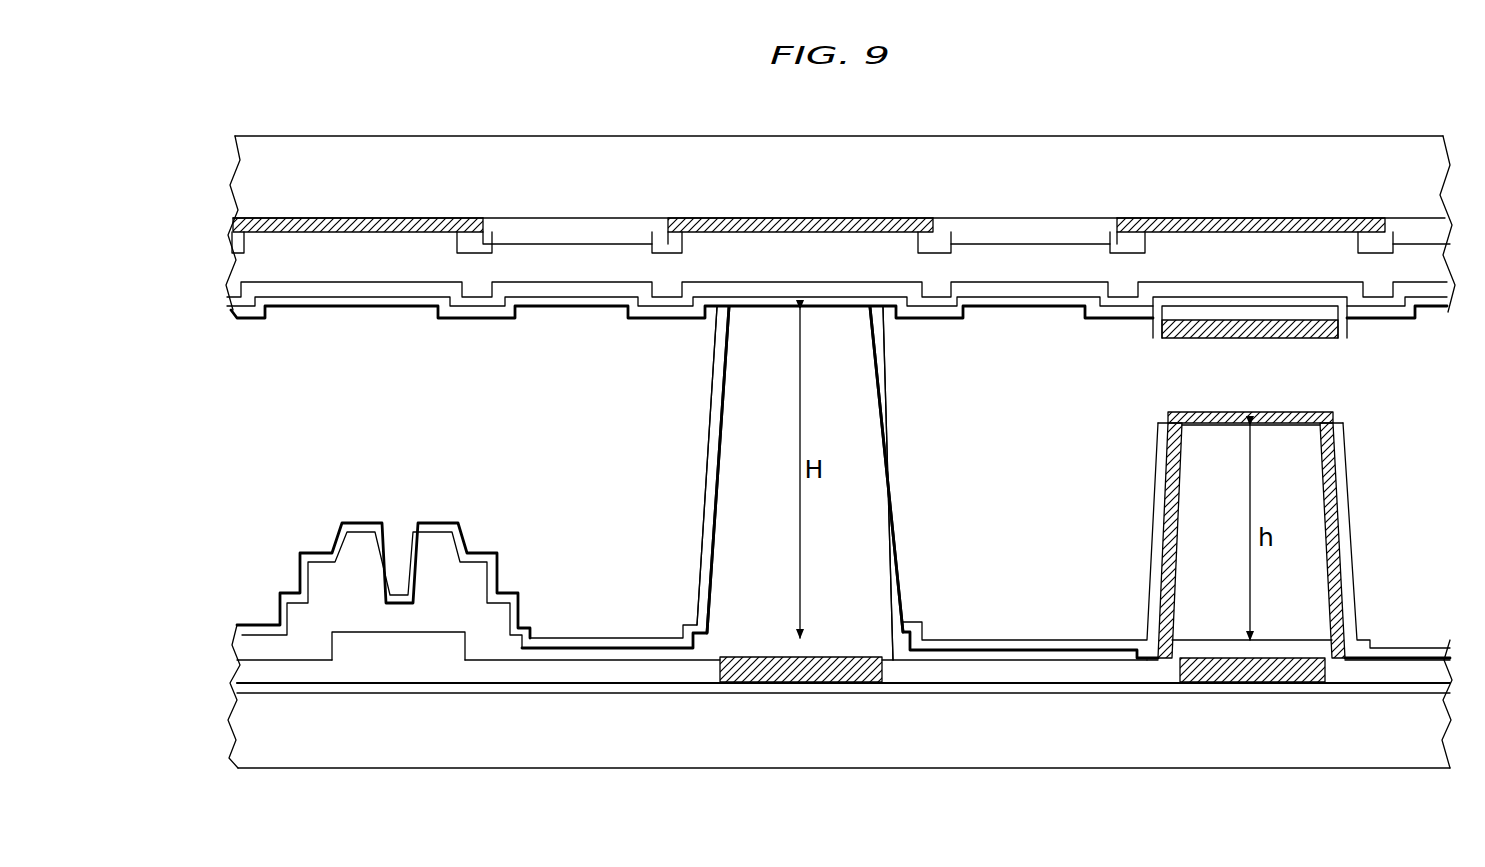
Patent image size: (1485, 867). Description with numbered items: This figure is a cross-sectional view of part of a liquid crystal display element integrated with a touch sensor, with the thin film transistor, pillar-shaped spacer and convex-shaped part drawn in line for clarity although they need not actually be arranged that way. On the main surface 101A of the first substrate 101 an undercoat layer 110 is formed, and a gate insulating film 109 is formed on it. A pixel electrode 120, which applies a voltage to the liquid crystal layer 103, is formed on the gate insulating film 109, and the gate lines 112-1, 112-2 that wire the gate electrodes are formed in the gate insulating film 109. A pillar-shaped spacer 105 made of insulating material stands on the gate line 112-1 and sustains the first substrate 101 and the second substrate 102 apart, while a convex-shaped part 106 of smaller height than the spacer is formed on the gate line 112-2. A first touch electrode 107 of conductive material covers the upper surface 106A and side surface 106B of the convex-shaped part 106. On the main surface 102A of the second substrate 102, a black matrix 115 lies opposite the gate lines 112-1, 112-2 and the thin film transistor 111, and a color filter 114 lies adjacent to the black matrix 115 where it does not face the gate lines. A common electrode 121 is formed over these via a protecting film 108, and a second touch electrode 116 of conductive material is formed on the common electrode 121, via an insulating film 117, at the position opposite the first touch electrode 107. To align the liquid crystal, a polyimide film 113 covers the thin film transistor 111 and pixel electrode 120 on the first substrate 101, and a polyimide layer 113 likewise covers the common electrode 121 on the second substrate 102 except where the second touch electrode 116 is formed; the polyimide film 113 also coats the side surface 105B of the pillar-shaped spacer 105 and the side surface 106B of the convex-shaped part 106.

The first substrate 101 is at (573, 760).
The main surface of first substrate 101A is at (498, 700).
The second substrate 102 is at (1128, 150).
The main surface of second substrate 102A is at (975, 217).
The liquid crystal layer 103 is at (262, 437).
The pillar-shaped spacer 105 is at (735, 480).
The side surface of pillar-shaped spacer 105B is at (712, 430).
The convex-shaped part 106 is at (1190, 462).
The upper surface of convex-shaped part 106A is at (1340, 432).
The side surface of convex-shaped part 106B is at (1180, 523).
The first touch electrode 107 is at (1244, 410).
The protecting film 108 is at (760, 245).
The gate insulating film 109 is at (613, 672).
The undercoat layer 110 is at (462, 685).
The thin film transistor 111 is at (432, 540).
The gate line 112-1 is at (797, 675).
The gate line 112-2 is at (1255, 675).
The polyimide film 113 is at (545, 318).
The color filter 114 is at (575, 232).
The black matrix 115 is at (378, 217).
The second touch electrode 116 is at (1212, 338).
The insulating film 117 is at (1160, 322).
The pixel electrode 120 is at (622, 652).
The common electrode 121 is at (583, 290).